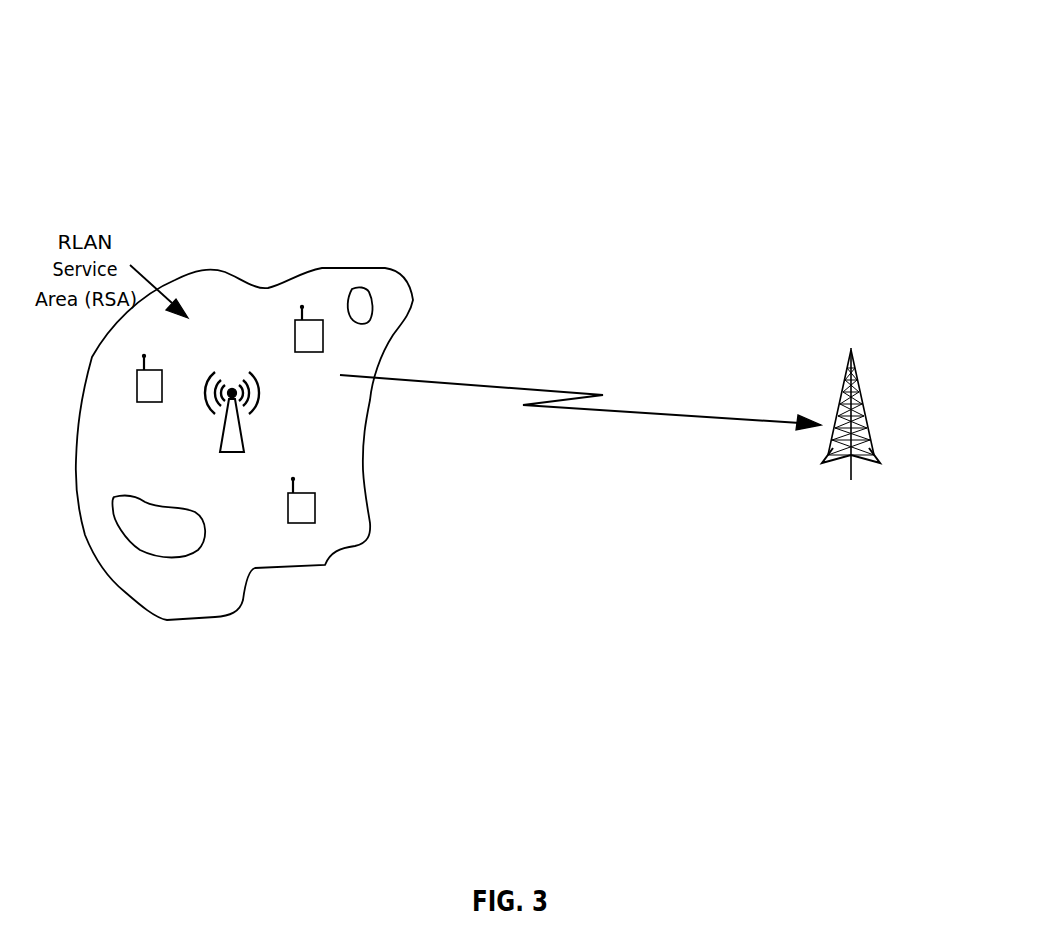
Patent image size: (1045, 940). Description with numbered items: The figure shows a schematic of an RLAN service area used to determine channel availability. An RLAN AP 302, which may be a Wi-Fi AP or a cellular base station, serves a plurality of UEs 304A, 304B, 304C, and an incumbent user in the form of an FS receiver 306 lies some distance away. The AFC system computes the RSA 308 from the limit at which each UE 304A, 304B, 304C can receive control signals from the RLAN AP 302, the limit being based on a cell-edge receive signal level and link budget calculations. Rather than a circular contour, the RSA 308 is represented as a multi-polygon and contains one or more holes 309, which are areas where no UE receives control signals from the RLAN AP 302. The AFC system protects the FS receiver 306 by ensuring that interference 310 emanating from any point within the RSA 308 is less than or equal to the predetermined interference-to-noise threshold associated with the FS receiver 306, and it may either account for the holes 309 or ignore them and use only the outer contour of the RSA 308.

The RLAN AP 302 is at (227, 373).
The UE 304A is at (323, 335).
The UE 304B is at (137, 387).
The UE 304C is at (317, 512).
The FS receiver 306 is at (852, 340).
The RSA 308 is at (292, 275).
The holes 309 is at (368, 291).
The interference 310 is at (603, 422).